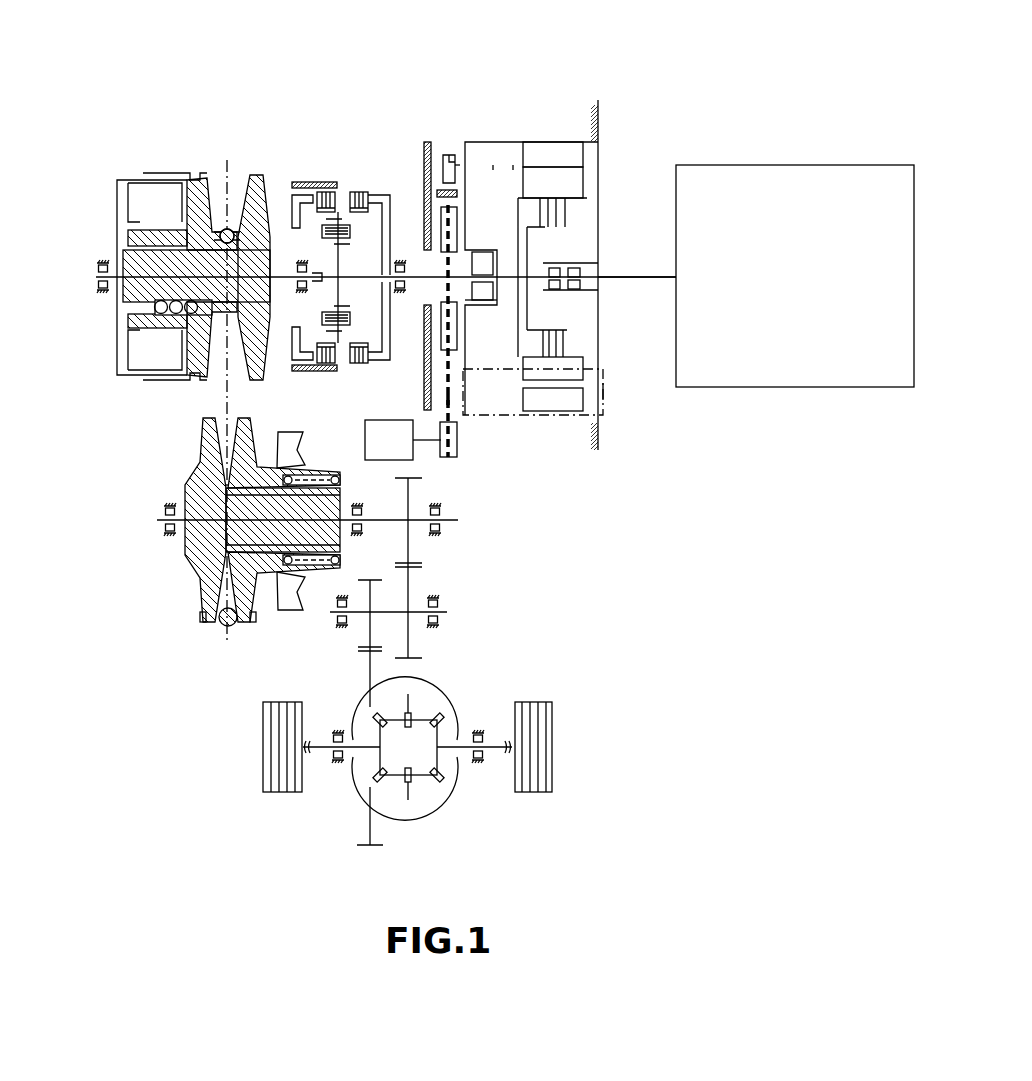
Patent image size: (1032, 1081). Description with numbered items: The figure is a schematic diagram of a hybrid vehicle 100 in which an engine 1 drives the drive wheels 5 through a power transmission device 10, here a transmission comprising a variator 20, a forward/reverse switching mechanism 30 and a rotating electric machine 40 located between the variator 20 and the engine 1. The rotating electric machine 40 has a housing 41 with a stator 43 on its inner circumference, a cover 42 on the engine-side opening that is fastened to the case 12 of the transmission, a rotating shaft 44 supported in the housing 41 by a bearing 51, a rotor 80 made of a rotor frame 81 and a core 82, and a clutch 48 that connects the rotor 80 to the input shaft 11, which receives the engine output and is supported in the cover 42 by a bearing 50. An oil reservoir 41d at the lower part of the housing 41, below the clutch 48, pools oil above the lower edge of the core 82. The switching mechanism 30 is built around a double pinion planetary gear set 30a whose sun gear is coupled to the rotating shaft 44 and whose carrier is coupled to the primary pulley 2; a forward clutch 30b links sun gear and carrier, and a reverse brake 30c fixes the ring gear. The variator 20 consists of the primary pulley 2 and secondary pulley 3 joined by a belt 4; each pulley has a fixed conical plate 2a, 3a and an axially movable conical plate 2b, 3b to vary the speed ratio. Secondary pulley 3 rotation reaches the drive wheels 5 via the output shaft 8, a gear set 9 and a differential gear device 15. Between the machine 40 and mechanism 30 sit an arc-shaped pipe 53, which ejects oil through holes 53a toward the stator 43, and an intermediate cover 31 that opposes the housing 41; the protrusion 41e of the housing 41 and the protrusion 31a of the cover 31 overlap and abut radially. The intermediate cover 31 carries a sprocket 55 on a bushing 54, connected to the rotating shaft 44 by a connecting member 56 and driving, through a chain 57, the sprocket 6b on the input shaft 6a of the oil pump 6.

The engine 1 is at (742, 165).
The primary pulley 2 is at (247, 175).
The fixed conical plate 2a is at (258, 175).
The movable conical plate 2b is at (195, 175).
The secondary pulley 3 is at (302, 630).
The fixed conical plate 3a is at (205, 578).
The movable conical plate 3b is at (250, 632).
The belt 4 is at (228, 228).
The drive wheels 5 is at (263, 740).
The oil pump 6 is at (365, 430).
The input shaft 6a is at (423, 440).
The sprocket 6b is at (460, 440).
The output shaft 8 is at (388, 520).
The gear set 9 is at (462, 582).
The power transmission device 10 is at (140, 73).
The input shaft 11 is at (620, 280).
The case 12 is at (598, 105).
The differential gear device 15 is at (452, 690).
The variator 20 is at (100, 175).
The forward/reverse switching mechanism 30 is at (302, 165).
The double pinion planetary gear set 30a is at (345, 203).
The forward clutch 30b is at (365, 193).
The reverse brake 30c is at (322, 195).
The intermediate cover 31 is at (426, 140).
The protrusion 31a is at (437, 193).
The rotating electric machine 40 is at (607, 402).
The housing 41 is at (517, 142).
The oil reservoir 41d is at (605, 390).
The protrusion 41e is at (463, 205).
The cover 42 is at (583, 180).
The stator 43 is at (583, 152).
The rotating shaft 44 is at (425, 275).
The clutch 48 is at (563, 345).
The bearing 50 is at (575, 270).
The bearing 51 is at (477, 300).
The pipe 53 is at (450, 153).
The holes 53a is at (458, 172).
The bushing 54 is at (428, 315).
The sprocket 55 is at (458, 340).
The connecting member 56 is at (458, 290).
The chain 57 is at (447, 400).
The rotor 80 is at (511, 65).
The rotor frame 81 is at (495, 165).
The core 82 is at (515, 165).
The vehicle 100 is at (782, 683).